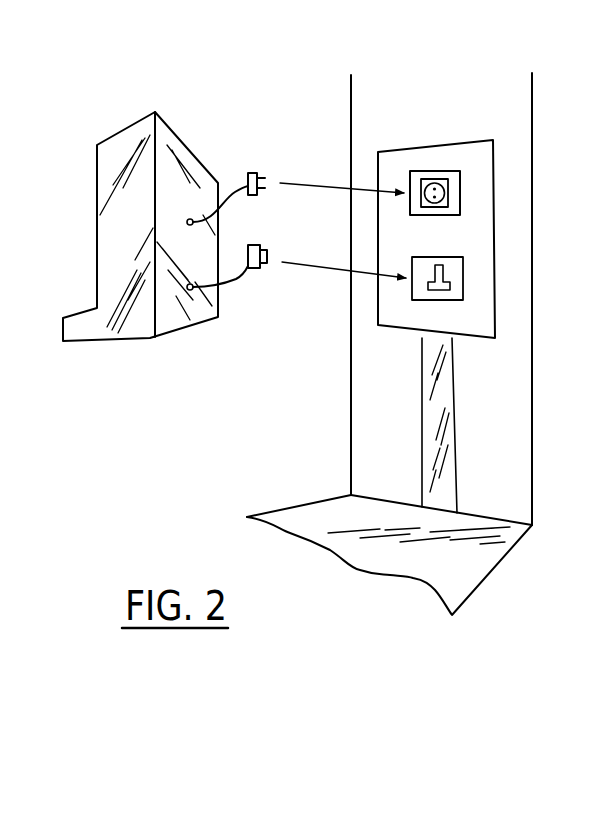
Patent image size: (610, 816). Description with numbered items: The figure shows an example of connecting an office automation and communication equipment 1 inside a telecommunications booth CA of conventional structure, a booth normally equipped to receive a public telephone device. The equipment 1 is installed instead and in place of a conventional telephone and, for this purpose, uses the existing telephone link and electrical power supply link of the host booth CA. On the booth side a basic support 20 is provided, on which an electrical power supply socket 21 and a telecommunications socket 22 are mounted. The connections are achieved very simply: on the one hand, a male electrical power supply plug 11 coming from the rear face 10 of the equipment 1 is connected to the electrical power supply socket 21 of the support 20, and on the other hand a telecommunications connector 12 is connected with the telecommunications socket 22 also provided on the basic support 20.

The office automation and communication equipment 1 is at (181, 129).
The rear face 10 is at (196, 186).
The male electrical power supply plug 11 is at (258, 172).
The telecommunications connector 12 is at (256, 268).
The basic support 20 is at (468, 139).
The electrical power supply socket 21 is at (456, 198).
The telecommunications socket 22 is at (458, 280).
The telecommunications booth CA is at (537, 438).